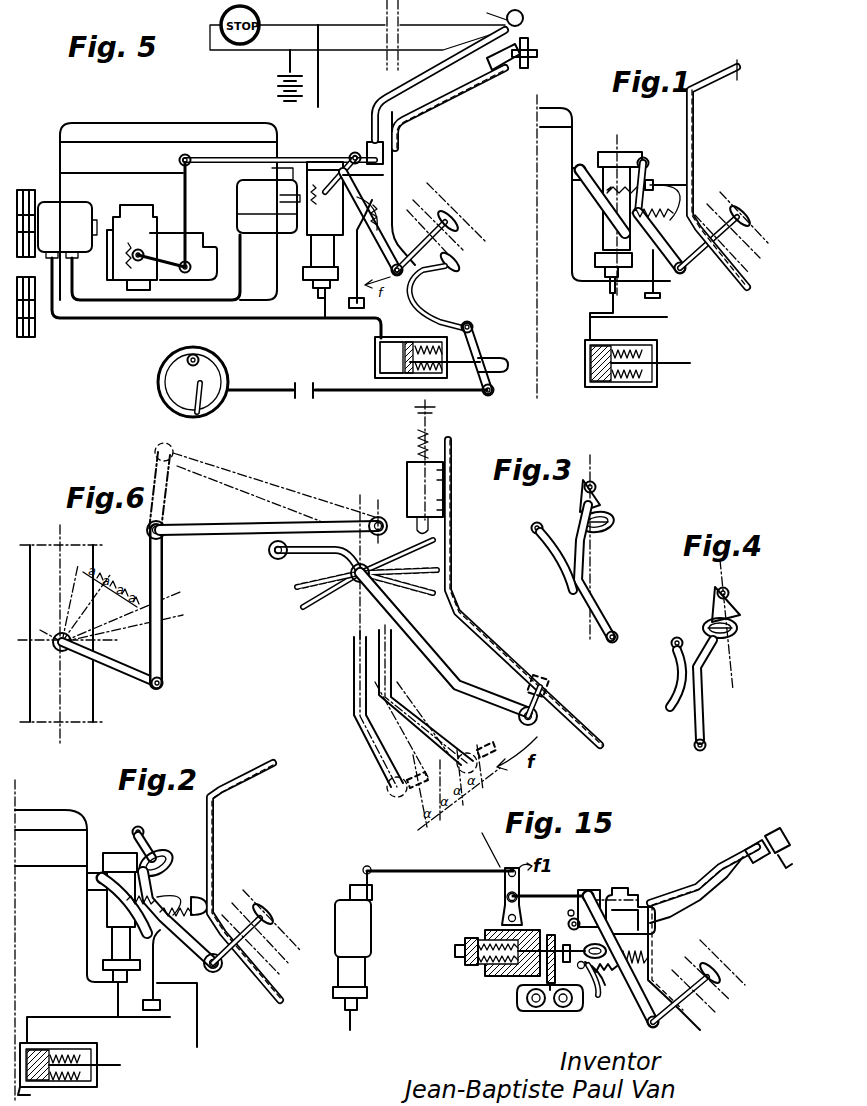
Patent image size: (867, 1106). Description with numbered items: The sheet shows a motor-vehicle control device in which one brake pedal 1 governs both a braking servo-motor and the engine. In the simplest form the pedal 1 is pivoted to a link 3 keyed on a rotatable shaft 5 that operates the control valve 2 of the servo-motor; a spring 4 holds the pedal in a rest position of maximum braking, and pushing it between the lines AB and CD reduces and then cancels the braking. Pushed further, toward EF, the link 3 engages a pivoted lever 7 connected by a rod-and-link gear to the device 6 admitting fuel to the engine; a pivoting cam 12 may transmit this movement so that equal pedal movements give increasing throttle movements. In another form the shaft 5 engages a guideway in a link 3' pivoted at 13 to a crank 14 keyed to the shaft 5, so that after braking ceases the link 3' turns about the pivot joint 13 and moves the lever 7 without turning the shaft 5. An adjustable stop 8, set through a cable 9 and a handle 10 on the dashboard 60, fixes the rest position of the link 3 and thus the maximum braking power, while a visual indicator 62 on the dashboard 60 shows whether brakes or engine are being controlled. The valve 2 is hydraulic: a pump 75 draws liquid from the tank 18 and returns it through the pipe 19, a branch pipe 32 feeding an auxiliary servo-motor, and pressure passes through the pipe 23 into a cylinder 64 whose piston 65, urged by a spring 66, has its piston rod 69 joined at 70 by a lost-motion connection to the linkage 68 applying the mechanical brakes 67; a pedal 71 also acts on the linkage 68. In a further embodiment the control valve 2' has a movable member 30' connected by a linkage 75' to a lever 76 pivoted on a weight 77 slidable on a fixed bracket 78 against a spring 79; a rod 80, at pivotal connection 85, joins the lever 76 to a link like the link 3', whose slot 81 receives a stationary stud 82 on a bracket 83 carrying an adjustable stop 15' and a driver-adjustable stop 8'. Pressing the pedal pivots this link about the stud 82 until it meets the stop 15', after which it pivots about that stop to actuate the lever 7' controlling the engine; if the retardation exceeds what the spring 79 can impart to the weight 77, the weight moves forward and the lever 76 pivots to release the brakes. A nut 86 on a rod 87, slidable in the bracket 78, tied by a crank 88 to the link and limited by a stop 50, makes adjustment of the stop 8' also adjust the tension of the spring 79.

In FIG. 5, the brake pedal 1 is at (457, 221).
In FIG. 1, the brake pedal 1 is at (741, 210).
In FIG. 6, the brake pedal 1 is at (532, 683).
In FIG. 4, the brake pedal 1 is at (672, 667).
In FIG. 2, the brake pedal 1 is at (265, 909).
In FIG. 15, the brake pedal 1 is at (712, 967).
In FIG. 5, the control valve 2 is at (313, 230).
In FIG. 1, the control valve 2 is at (618, 207).
In FIG. 2, the control valve 2 is at (98, 943).
In FIG. 15, the control valve 2' is at (367, 965).
In FIG. 5, the link 3 is at (370, 221).
In FIG. 1, the link 3 is at (663, 218).
In FIG. 6, the link 3 is at (443, 642).
In FIG. 3, the link 3' is at (599, 574).
In FIG. 4, the link 3' is at (713, 695).
In FIG. 2, the link 3' is at (182, 924).
In FIG. 5, the spring 4 is at (384, 212).
In FIG. 1, the spring 4 is at (665, 205).
In FIG. 2, the spring 4 is at (179, 911).
In FIG. 5, the rotatable shaft 5 is at (354, 153).
In FIG. 1, the rotatable shaft 5 is at (648, 160).
In FIG. 6, the rotatable shaft 5 is at (371, 563).
In FIG. 3, the rotatable shaft 5 is at (598, 532).
In FIG. 4, the rotatable shaft 5 is at (728, 638).
In FIG. 2, the rotatable shaft 5 is at (170, 870).
In FIG. 5, the throttle 6 is at (143, 250).
In FIG. 6, the throttle 6 is at (52, 655).
In FIG. 1, the pivoted lever 7 is at (586, 203).
In FIG. 6, the pivoted lever 7 is at (269, 546).
In FIG. 3, the pivoted lever 7 is at (547, 557).
In FIG. 2, the pivoted lever 7 is at (100, 903).
In FIG. 5, the lever 7' is at (337, 160).
In FIG. 15, the lever 7' is at (597, 1002).
In FIG. 5, the adjustable stop 8 is at (381, 188).
In FIG. 6, the adjustable stop 8 is at (442, 498).
In FIG. 15, the stop lever 8' is at (603, 899).
In FIG. 5, the cable 9 is at (423, 93).
In FIG. 6, the cable 9 is at (432, 412).
In FIG. 15, the cable 9 is at (703, 868).
In FIG. 5, the handle 10 is at (538, 55).
In FIG. 15, the handle 10 is at (771, 857).
In FIG. 5, the pivoting cam 12 is at (318, 165).
In FIG. 6, the pivoting cam 12 is at (307, 547).
In FIG. 3, the pivot joint 13 is at (594, 486).
In FIG. 4, the pivot joint 13 is at (718, 590).
In FIG. 2, the pivot joint 13 is at (143, 830).
In FIG. 3, the crank 14 is at (580, 500).
In FIG. 4, the crank 14 is at (735, 606).
In FIG. 2, the crank 14 is at (133, 850).
In FIG. 15, the stop 15' is at (630, 896).
In FIG. 5, the tank 18 is at (240, 218).
In FIG. 5, the pipe 19 is at (165, 318).
In FIG. 5, the pipe 23 is at (333, 320).
In FIG. 15, the movable member 30' is at (344, 883).
In FIG. 5, the branch pipe 32 is at (358, 268).
In FIG. 1, the branch pipe 32 is at (682, 186).
In FIG. 2, the branch pipe 32 is at (157, 983).
In FIG. 15, the nut 50 is at (568, 962).
In FIG. 5, the dashboard 60 is at (456, 100).
In FIG. 5, the visual indicator 62 is at (524, 19).
In FIG. 5, the cylinder 64 is at (375, 356).
In FIG. 5, the piston 65 is at (404, 342).
In FIG. 5, the spring 66 is at (424, 343).
In FIG. 5, the brakes 67 is at (217, 368).
In FIG. 5, the linkage 68 is at (478, 345).
In FIG. 5, the piston rod 69 is at (441, 343).
In FIG. 5, the pivotal connection 70 is at (492, 376).
In FIG. 5, the pedal 71 is at (465, 265).
In FIG. 5, the pump 75 is at (73, 217).
In FIG. 15, the linkage 75' is at (438, 883).
In FIG. 15, the lever 76 is at (507, 888).
In FIG. 15, the weight 77 is at (500, 977).
In FIG. 15, the fixed bracket 78 is at (550, 1011).
In FIG. 15, the spring 79 is at (478, 960).
In FIG. 15, the rod 80 is at (560, 898).
In FIG. 15, the slot 81 is at (633, 952).
In FIG. 15, the stationary stud 82 is at (586, 932).
In FIG. 15, the bracket 83 is at (654, 938).
In FIG. 15, the pivotal connection 85 is at (505, 900).
In FIG. 15, the adjusting nut 86 is at (463, 958).
In FIG. 15, the rod 87 is at (513, 952).
In FIG. 15, the crank 88 is at (603, 977).